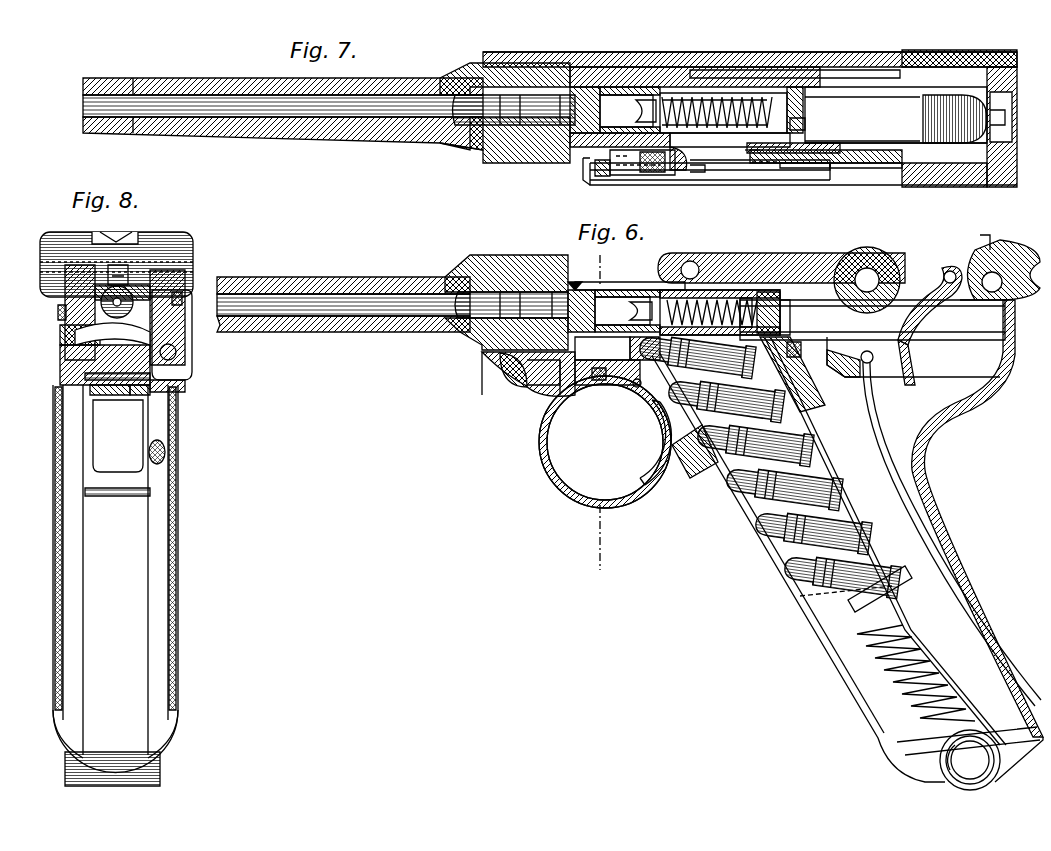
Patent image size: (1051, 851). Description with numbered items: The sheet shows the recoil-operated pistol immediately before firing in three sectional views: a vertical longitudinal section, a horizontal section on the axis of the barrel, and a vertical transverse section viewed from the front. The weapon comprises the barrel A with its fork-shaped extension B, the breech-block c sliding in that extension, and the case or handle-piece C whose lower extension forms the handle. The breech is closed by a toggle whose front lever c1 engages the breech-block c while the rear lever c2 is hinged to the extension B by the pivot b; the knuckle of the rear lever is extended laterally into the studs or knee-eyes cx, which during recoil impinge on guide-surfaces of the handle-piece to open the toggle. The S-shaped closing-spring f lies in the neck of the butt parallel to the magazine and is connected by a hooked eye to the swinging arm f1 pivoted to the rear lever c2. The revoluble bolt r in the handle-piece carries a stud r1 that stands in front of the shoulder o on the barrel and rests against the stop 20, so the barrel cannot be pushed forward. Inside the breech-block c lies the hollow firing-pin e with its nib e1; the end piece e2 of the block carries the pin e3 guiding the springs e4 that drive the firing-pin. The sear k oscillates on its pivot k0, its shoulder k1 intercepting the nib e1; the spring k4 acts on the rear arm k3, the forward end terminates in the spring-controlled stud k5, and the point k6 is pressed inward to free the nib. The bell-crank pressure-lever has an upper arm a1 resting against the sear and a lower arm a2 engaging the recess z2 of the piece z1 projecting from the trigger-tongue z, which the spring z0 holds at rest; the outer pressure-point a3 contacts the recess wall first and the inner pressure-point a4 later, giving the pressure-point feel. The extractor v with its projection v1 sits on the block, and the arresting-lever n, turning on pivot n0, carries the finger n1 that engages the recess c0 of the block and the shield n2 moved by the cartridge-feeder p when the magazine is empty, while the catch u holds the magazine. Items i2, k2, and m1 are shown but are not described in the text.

In FIG. 7, the barrel A is at (226, 82).
In FIG. 6, the barrel A is at (357, 277).
In FIG. 6, the fork-shaped extension B is at (560, 262).
In FIG. 8, the fork-shaped extension B is at (85, 262).
In FIG. 7, the handle-piece C is at (985, 60).
In FIG. 6, the handle-piece C is at (762, 566).
In FIG. 8, the handle-piece C is at (115, 585).
In FIG. 6, the pivot b is at (1018, 270).
In FIG. 7, the breech-block c is at (590, 85).
In FIG. 6, the breech-block c is at (614, 311).
In FIG. 8, the breech-block c is at (70, 330).
In FIG. 6, the slot or recess c0 is at (602, 348).
In FIG. 6, the front lever c1 is at (790, 265).
In FIG. 6, the rear lever c2 is at (945, 265).
In FIG. 6, the studs or projections cx is at (870, 262).
In FIG. 8, the studs or projections cx is at (170, 245).
In FIG. 7, the firing-pin e is at (650, 100).
In FIG. 6, the firing-pin e is at (648, 292).
In FIG. 8, the firing-pin e is at (75, 350).
In FIG. 7, the nib e1 is at (805, 122).
In FIG. 7, the end piece e2 is at (790, 85).
In FIG. 6, the end piece e2 is at (778, 318).
In FIG. 7, the pin e3 is at (700, 140).
In FIG. 6, the pin e3 is at (762, 295).
In FIG. 7, the springs e4 is at (680, 151).
In FIG. 6, the springs e4 is at (742, 295).
In FIG. 6, the closing-spring f is at (880, 485).
In FIG. 6, the swinging arm f1 is at (910, 345).
In FIG. 8, the extractor pin i2 is at (62, 312).
In FIG. 7, the sear k is at (710, 166).
In FIG. 7, the pivot k0 is at (680, 172).
In FIG. 7, the shoulder k1 is at (745, 150).
In FIG. 7, the sear bar slot k2 is at (790, 168).
In FIG. 7, the rear arm k3 is at (770, 170).
In FIG. 7, the spring k4 is at (845, 168).
In FIG. 7, the spring-controlled pin or stud k5 is at (650, 175).
In FIG. 7, the point k6 is at (590, 172).
In FIG. 8, the point k6 is at (180, 298).
In FIG. 7, the arresting-lever n is at (755, 68).
In FIG. 6, the arresting-lever n is at (1020, 640).
In FIG. 7, the pivot n0 is at (828, 78).
In FIG. 7, the arresting finger or tappet n1 is at (745, 75).
In FIG. 6, the arresting finger or tappet n1 is at (810, 318).
In FIG. 7, the flange or projecting shield n2 is at (912, 72).
In FIG. 7, the upper arm a1 is at (605, 178).
In FIG. 8, the upper arm a1 is at (185, 340).
In FIG. 8, the lower arm a2 is at (180, 376).
In FIG. 8, the pressure-point a3 is at (120, 390).
In FIG. 8, the inner pressure-point a4 is at (150, 390).
In FIG. 6, the magazine spring m1 is at (905, 685).
In FIG. 6, the shoulder o is at (558, 377).
In FIG. 6, the cartridge-feeder p is at (812, 633).
In FIG. 6, the revoluble bolt r is at (482, 372).
In FIG. 6, the stud r1 is at (543, 372).
In FIG. 6, the catch u is at (690, 482).
In FIG. 8, the catch u is at (167, 453).
In FIG. 6, the cartridge-extractor v is at (622, 283).
In FIG. 6, the projection v1 is at (578, 275).
In FIG. 6, the trigger-tongue z is at (650, 433).
In FIG. 8, the trigger-tongue z is at (117, 448).
In FIG. 6, the spring z0 is at (632, 388).
In FIG. 6, the piece z1 is at (600, 385).
In FIG. 8, the recess z2 is at (88, 378).
In FIG. 6, the stop 20 is at (480, 362).